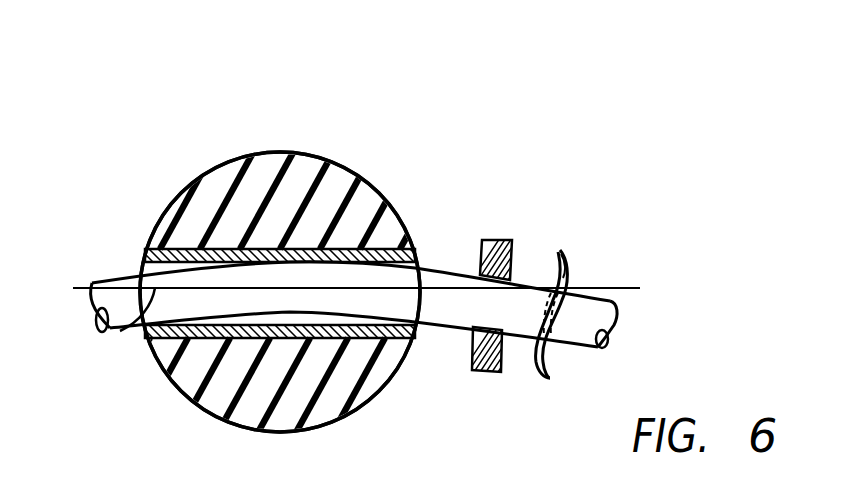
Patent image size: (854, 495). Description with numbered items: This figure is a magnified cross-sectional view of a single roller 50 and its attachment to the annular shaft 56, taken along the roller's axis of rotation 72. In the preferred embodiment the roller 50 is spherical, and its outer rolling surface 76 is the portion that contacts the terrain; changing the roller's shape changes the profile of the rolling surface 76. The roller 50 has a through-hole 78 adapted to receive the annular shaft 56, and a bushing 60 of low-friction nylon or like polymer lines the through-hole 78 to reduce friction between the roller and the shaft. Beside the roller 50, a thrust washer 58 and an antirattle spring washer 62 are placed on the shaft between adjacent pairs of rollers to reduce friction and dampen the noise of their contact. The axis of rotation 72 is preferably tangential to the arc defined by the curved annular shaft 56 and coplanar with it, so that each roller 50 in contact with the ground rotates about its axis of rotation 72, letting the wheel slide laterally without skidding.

The roller 50 is at (305, 152).
The rolling surface 76 is at (283, 152).
The bushing 60 is at (377, 250).
The through-hole 78 is at (383, 326).
The axis of rotation 72 is at (137, 326).
The annular shaft 56 is at (96, 318).
The thrust washer 58 is at (492, 240).
The antirattle spring washer 62 is at (570, 260).